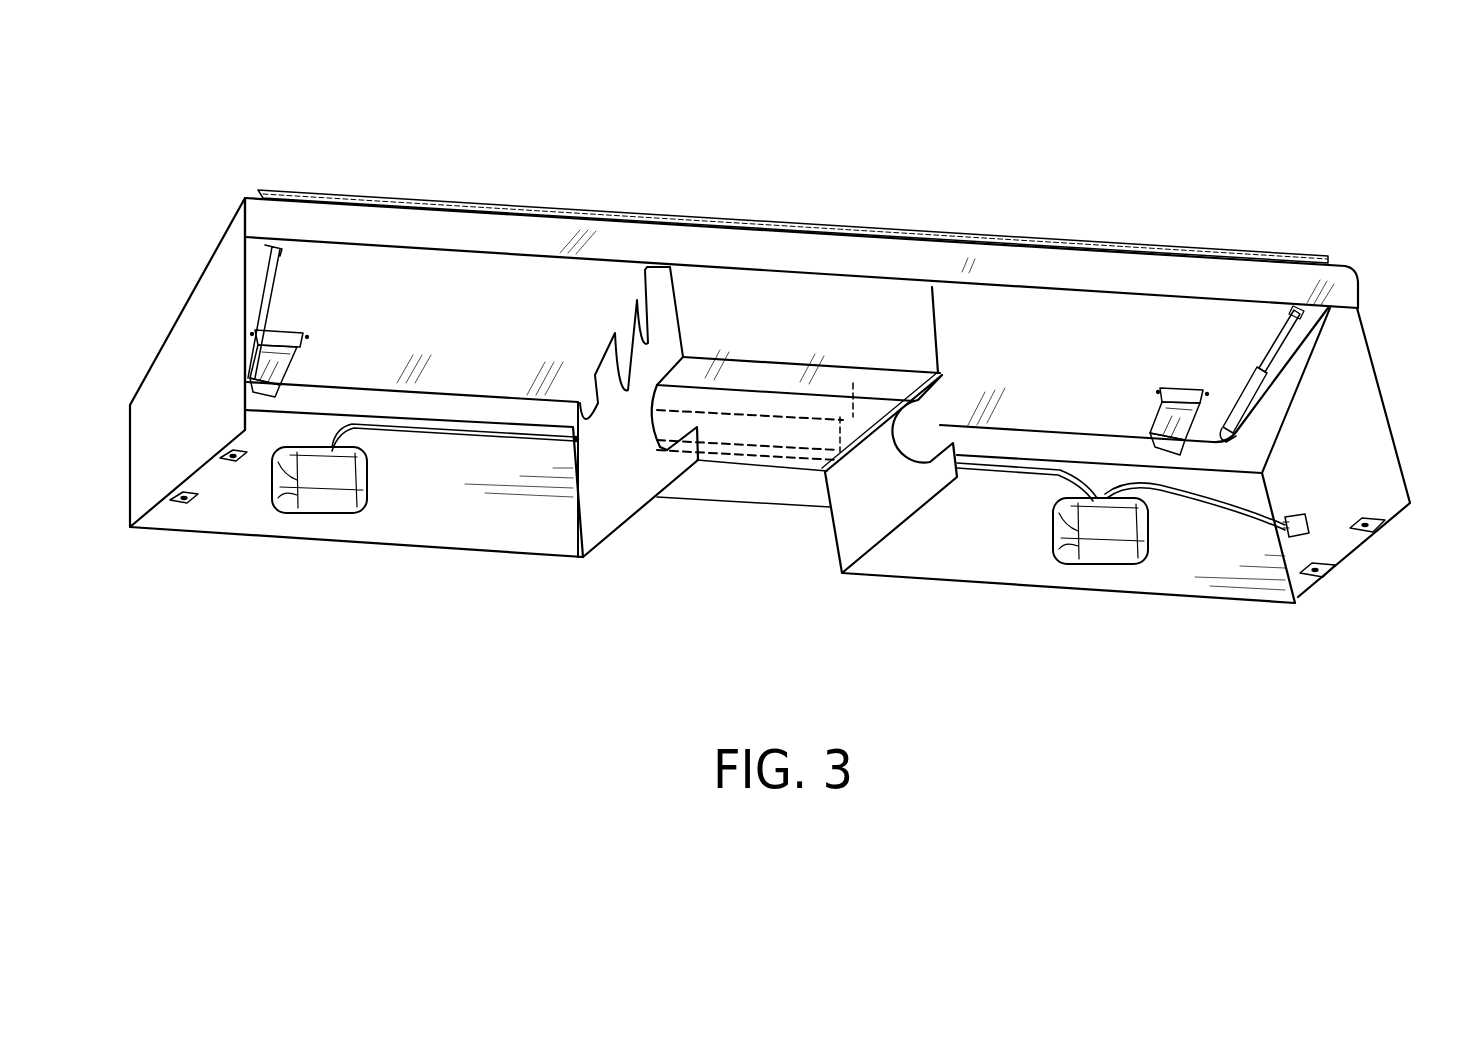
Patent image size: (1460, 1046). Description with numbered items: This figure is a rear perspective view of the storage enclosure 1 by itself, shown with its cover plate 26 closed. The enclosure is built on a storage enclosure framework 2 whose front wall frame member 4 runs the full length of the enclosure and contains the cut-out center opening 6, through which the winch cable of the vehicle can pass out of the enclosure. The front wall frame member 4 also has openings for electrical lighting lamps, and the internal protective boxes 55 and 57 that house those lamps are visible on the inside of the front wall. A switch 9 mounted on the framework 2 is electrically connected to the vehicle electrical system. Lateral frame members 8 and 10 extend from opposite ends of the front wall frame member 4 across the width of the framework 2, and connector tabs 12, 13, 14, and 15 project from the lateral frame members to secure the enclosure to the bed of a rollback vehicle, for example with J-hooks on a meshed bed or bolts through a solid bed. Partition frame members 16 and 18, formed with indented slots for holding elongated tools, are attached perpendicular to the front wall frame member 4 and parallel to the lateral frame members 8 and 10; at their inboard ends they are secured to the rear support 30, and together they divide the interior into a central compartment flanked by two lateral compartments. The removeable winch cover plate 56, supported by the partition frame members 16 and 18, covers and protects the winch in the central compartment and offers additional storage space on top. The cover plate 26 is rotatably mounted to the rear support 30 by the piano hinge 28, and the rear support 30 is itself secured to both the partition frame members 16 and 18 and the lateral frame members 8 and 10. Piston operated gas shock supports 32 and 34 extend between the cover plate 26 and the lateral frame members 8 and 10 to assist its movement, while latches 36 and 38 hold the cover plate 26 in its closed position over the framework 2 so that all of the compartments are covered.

The storage enclosure 1 is at (1392, 269).
The storage enclosure framework 2 is at (247, 200).
The front wall frame member 4 is at (511, 516).
The cut-out center opening 6 is at (742, 540).
The lateral frame member 8 is at (1348, 388).
The switch 9 is at (1362, 528).
The lateral frame member 10 is at (185, 365).
The connector tab 12 is at (1308, 526).
The connector tab 13 is at (1305, 572).
The connector tab 14 is at (222, 460).
The connector tab 15 is at (175, 503).
The partition frame member 16 is at (880, 512).
The partition frame member 18 is at (607, 497).
The cover plate 26 is at (512, 305).
The piano hinge 28 is at (392, 196).
The rear support 30 is at (1073, 270).
The piston operated gas shock support 32 is at (1243, 385).
The piston operated gas shock support 34 is at (265, 282).
The latch 36 is at (1180, 388).
The latch 38 is at (280, 333).
The internal protective box 55 is at (1107, 528).
The removeable winch cover plate 56 is at (783, 383).
The internal protective box 57 is at (328, 478).